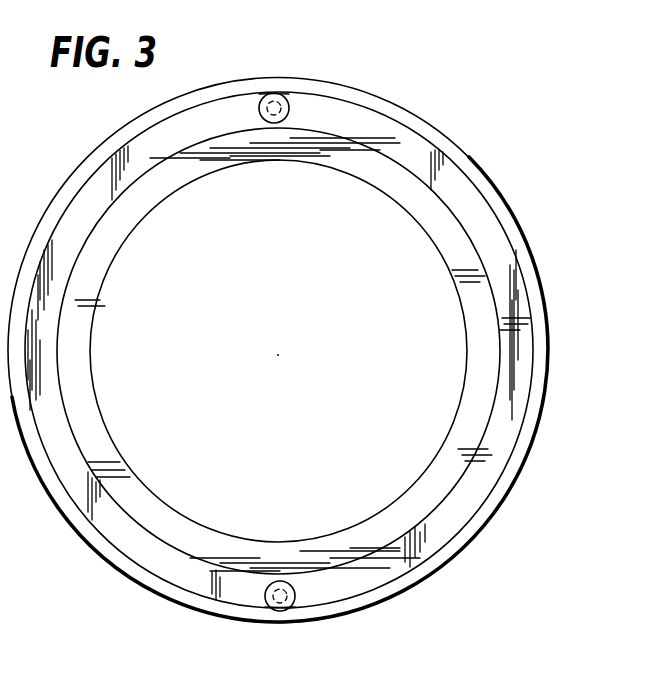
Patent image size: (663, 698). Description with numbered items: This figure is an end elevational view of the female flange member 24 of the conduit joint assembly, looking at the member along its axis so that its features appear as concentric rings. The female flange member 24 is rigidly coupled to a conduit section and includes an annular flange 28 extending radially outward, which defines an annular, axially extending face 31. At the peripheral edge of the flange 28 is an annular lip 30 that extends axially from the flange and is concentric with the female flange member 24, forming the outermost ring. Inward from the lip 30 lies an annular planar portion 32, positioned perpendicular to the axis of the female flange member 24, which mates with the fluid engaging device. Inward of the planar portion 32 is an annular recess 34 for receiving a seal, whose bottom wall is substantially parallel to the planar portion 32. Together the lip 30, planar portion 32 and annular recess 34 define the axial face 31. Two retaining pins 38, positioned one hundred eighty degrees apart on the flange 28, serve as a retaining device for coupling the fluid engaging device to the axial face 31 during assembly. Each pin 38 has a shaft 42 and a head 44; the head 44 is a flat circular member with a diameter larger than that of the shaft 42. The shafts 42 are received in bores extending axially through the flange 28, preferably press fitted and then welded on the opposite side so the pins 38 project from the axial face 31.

The female flange member 24 is at (458, 331).
The annular flange 28 is at (552, 297).
The annular lip 30 is at (538, 375).
The axial face 31 is at (485, 245).
The annular planar portion 32 is at (307, 120).
The annular recess 34 is at (392, 185).
The retaining pin 38 is at (274, 86).
The shaft 42 is at (287, 112).
The head 44 is at (290, 104).